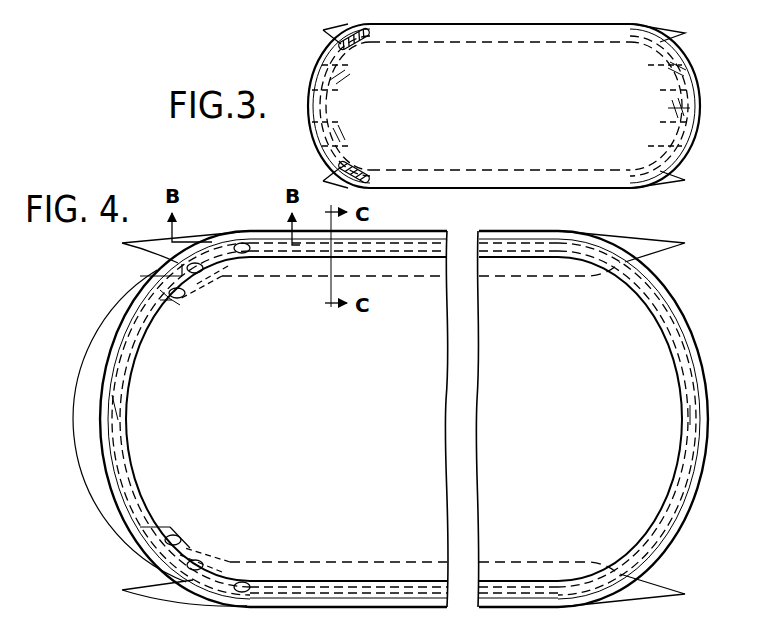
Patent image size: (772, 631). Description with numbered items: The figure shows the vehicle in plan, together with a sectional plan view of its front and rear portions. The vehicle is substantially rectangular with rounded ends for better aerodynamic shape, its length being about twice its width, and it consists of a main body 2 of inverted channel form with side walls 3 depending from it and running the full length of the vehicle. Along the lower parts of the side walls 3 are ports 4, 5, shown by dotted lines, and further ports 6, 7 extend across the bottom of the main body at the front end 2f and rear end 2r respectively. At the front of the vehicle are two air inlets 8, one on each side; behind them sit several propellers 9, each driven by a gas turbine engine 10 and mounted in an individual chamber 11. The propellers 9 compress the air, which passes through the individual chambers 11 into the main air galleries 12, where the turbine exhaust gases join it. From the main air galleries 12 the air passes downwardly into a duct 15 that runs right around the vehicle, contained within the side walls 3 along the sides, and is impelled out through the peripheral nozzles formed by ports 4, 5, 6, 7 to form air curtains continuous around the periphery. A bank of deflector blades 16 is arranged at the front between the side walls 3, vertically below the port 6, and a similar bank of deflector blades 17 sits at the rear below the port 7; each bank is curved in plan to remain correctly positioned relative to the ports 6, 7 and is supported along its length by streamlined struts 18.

In FIG. 3, the main body 2 is at (514, 48).
In FIG. 4, the main body 2 is at (664, 291).
In FIG. 3, the front end 2f is at (313, 82).
In FIG. 4, the front end 2f is at (78, 388).
In FIG. 3, the rear end 2r is at (692, 135).
In FIG. 4, the rear end 2r is at (694, 500).
In FIG. 3, the side walls 3 is at (345, 26).
In FIG. 4, the side walls 3 is at (520, 277).
In FIG. 4, the port 4 is at (400, 248).
In FIG. 4, the port 5 is at (390, 592).
In FIG. 4, the port 6 is at (106, 430).
In FIG. 4, the port 7 is at (687, 413).
In FIG. 3, the air inlets 8 is at (358, 32).
In FIG. 4, the propellers 9 is at (165, 282).
In FIG. 4, the gas turbine engine 10 is at (220, 266).
In FIG. 4, the individual chambers 11 is at (160, 293).
In FIG. 4, the main air galleries 12 is at (228, 264).
In FIG. 4, the duct 15 is at (130, 468).
In FIG. 3, the bank of deflector blades 16 is at (343, 135).
In FIG. 3, the bank of deflector blades 17 is at (690, 110).
In FIG. 3, the struts 18 is at (338, 76).